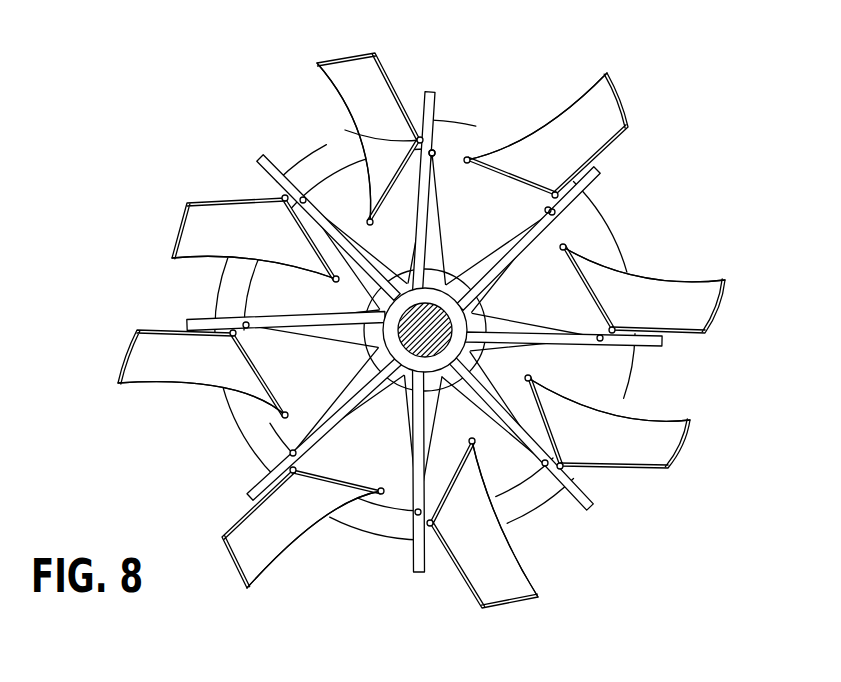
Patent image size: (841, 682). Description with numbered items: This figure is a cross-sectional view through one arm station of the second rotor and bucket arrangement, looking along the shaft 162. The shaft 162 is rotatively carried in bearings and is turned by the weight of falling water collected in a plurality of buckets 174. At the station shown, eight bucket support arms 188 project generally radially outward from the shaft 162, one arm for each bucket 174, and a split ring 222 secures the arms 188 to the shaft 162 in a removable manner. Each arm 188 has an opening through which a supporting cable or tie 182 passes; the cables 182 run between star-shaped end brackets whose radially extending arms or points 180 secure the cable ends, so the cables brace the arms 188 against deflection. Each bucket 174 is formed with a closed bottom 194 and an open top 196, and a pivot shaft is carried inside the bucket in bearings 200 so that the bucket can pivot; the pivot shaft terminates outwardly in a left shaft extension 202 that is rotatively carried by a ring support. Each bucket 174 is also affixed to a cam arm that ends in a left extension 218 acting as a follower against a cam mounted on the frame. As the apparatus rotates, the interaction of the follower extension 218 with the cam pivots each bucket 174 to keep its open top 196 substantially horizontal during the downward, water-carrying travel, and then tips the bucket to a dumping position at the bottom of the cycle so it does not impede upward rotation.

The shaft 162 is at (443, 328).
The bucket 174 is at (345, 50).
The radially extending arm or point 180 is at (372, 417).
The supporting cable or tie 182 is at (548, 210).
The bucket support arm 188 is at (437, 102).
The closed bottom 194 is at (397, 84).
The open top 196 is at (330, 89).
The bearing 200 is at (360, 163).
The left shaft extension 202 is at (352, 138).
The left extension 218 is at (468, 158).
The split ring 222 is at (367, 343).